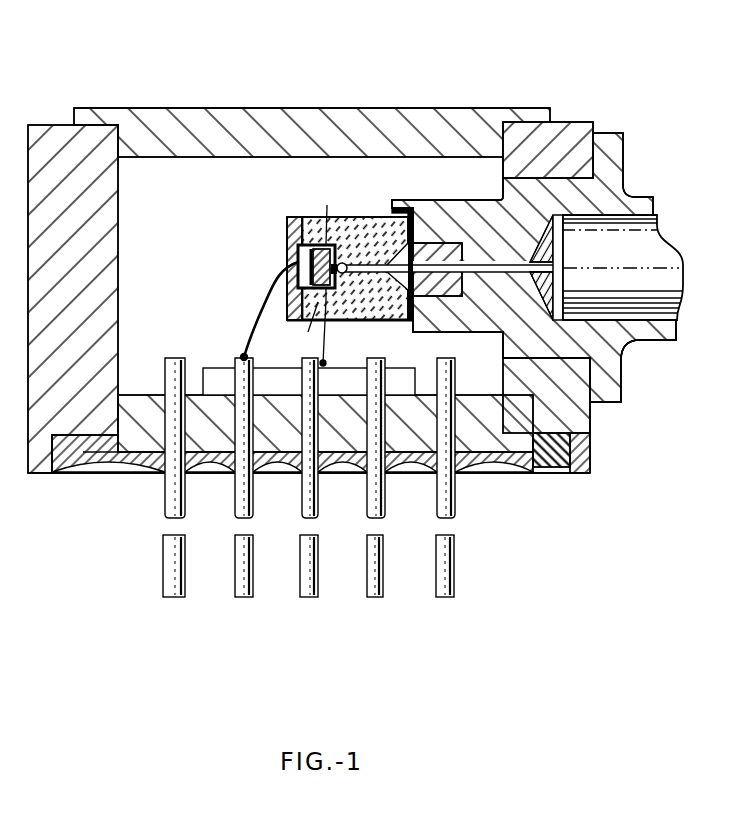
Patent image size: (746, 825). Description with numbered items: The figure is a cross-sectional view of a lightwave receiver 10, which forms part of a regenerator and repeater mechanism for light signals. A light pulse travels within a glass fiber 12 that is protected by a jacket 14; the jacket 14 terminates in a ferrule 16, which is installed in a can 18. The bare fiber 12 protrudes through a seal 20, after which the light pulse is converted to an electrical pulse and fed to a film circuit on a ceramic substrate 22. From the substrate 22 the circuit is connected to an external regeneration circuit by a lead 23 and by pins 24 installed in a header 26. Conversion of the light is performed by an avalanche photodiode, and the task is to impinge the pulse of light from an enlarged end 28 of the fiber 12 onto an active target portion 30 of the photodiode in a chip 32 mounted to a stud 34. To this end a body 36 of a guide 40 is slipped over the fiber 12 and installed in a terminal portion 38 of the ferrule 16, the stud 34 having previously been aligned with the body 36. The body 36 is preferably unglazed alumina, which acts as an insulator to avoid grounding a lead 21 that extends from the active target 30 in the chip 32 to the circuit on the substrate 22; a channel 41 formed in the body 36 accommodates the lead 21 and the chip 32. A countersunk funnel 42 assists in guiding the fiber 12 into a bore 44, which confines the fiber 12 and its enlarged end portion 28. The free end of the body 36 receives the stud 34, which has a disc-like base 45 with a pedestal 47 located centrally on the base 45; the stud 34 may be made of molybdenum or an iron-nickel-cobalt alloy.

The lightwave receiver 10 is at (411, 100).
The glass fiber 12 is at (540, 262).
The jacket 14 is at (645, 252).
The ferrule 16 is at (652, 341).
The can 18 is at (202, 108).
The seal 20 is at (470, 320).
The lead 21 is at (330, 336).
The ceramic substrate 22 is at (212, 368).
The lead 23 is at (246, 350).
The pins 24 is at (164, 558).
The header 26 is at (157, 405).
The enlarged end 28 is at (342, 262).
The active target portion 30 is at (333, 246).
The chip 32 is at (298, 258).
The stud 34 is at (284, 218).
The body 36 is at (370, 217).
The terminal portion 38 is at (462, 200).
The guide 40 is at (386, 204).
The channel 41 is at (303, 325).
The countersunk funnel 42 is at (418, 250).
The bore 44 is at (384, 322).
The disc-like base 45 is at (292, 321).
The pedestal 47 is at (298, 248).